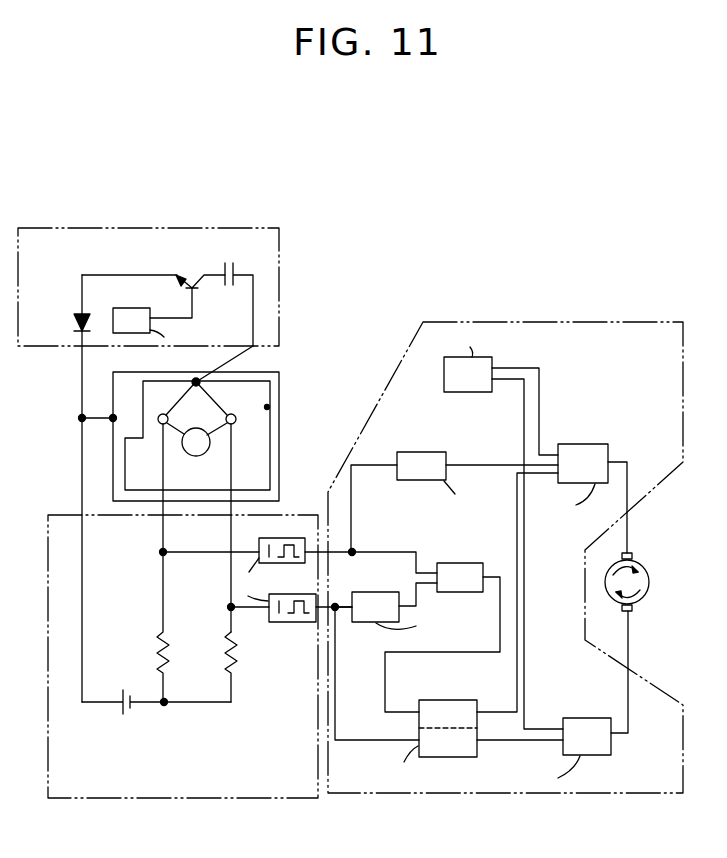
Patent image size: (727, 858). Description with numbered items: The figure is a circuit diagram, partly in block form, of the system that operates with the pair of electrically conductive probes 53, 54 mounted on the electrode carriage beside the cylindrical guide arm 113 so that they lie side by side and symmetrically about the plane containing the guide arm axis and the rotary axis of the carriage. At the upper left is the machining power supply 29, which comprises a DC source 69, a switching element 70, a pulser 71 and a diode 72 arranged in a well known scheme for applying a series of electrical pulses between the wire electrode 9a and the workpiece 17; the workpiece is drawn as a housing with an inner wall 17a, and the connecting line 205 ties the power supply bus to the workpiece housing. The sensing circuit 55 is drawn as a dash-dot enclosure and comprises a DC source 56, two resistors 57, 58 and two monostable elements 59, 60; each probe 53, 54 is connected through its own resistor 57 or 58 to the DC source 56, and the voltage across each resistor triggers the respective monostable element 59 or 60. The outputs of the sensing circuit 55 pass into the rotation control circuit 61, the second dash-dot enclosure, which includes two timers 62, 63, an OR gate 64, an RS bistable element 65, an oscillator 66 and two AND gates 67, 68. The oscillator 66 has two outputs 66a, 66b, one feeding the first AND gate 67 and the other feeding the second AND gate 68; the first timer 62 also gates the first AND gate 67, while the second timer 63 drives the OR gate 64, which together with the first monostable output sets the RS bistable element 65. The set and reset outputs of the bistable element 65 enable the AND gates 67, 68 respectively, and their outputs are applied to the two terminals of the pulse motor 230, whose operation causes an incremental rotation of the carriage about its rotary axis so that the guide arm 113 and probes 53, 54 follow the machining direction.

The machining power supply 29 is at (239, 228).
The diode 72 is at (78, 316).
The pulser 71 is at (127, 317).
The switching element 70 is at (188, 281).
The DC source 69 is at (232, 267).
The wire electrode 9a is at (203, 380).
The workpiece 17 is at (280, 397).
The inner housing wall 17a is at (268, 410).
The connecting line 205 is at (170, 402).
The electrically conductive probe 53 is at (158, 424).
The electrically conductive probe 54 is at (236, 417).
The guide arm 113 is at (208, 432).
The sensing circuit 55 is at (234, 808).
The monostable element 59 is at (292, 537).
The monostable element 60 is at (292, 622).
The resistor 57 is at (156, 658).
The resistor 58 is at (225, 658).
The DC source 56 is at (128, 715).
The rotation control circuit 61 is at (432, 803).
The oscillator 66 is at (444, 380).
The oscillator output 66a is at (492, 366).
The oscillator output 66b is at (492, 390).
The timer 62 is at (430, 481).
The AND gate 67 is at (607, 449).
The OR gate 64 is at (465, 563).
The timer 63 is at (392, 574).
The RS bistable element 65 is at (474, 700).
The AND gate 68 is at (613, 745).
The pulse motor 230 is at (645, 577).